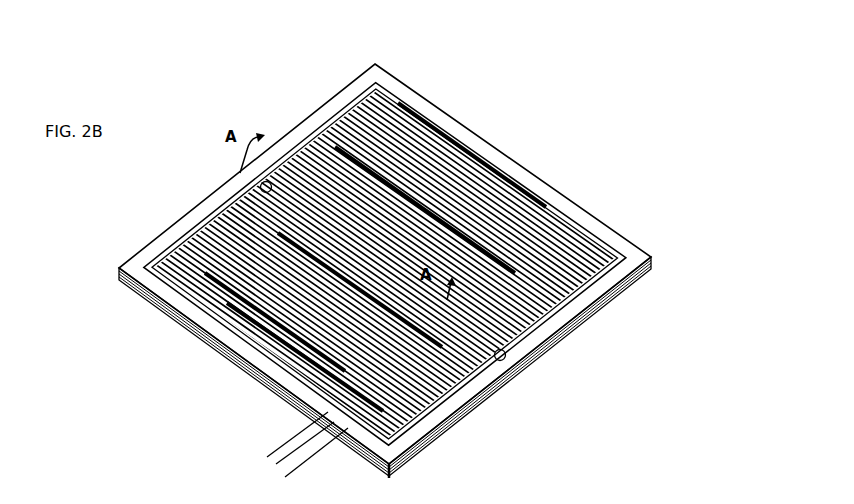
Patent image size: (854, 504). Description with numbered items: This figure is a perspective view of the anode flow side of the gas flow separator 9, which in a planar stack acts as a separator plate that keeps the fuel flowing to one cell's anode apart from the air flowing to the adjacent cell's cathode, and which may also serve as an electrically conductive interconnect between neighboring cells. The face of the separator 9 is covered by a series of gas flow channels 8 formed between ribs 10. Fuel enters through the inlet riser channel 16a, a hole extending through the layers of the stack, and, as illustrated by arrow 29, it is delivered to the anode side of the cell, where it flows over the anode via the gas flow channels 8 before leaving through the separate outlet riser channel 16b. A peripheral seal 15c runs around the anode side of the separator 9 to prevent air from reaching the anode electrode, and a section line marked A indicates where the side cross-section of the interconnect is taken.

The gas flow separator 9 is at (678, 240).
The peripheral seal 15c is at (490, 154).
The ribs 10 is at (289, 385).
The arrow 29 is at (425, 122).
The riser channel 16a is at (259, 188).
The outlet riser channel 16b is at (510, 362).
The gas flow channels 8 is at (278, 467).